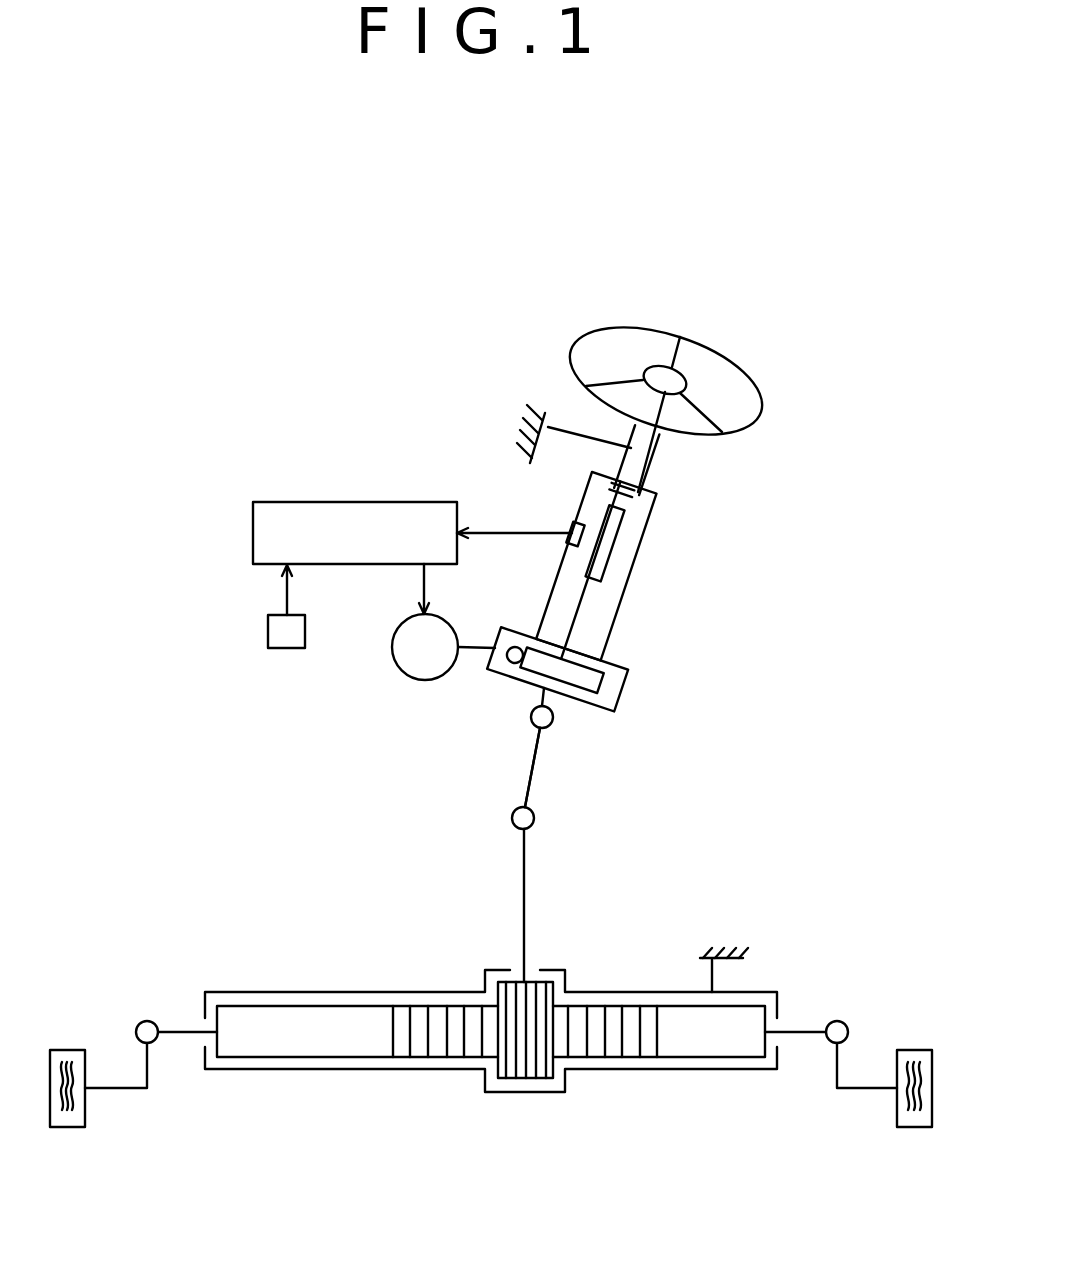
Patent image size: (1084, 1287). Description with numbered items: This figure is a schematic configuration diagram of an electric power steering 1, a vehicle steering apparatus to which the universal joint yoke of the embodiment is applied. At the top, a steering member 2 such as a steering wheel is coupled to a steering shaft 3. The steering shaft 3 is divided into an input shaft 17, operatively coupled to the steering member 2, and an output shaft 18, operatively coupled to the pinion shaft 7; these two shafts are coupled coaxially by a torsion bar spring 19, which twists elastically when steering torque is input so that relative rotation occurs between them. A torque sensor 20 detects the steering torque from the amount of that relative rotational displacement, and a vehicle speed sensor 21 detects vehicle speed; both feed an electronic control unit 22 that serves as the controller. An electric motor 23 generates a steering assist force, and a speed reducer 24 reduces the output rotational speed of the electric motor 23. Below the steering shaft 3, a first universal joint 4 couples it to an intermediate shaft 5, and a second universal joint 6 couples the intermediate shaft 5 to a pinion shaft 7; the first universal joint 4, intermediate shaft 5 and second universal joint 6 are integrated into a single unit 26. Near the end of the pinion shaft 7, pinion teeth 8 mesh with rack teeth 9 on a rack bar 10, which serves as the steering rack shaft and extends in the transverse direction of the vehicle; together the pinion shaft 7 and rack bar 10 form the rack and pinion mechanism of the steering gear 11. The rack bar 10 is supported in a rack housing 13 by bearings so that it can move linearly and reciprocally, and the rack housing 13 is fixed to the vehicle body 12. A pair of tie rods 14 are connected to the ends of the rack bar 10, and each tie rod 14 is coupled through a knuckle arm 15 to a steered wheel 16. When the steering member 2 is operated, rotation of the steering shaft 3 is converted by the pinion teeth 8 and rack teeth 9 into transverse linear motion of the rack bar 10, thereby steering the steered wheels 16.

The electric power steering 1 is at (788, 323).
The steering member 2 is at (652, 326).
The steering shaft 3 is at (650, 451).
The first universal joint 4 is at (553, 717).
The intermediate shaft 5 is at (533, 768).
The second universal joint 6 is at (533, 818).
The pinion shaft 7 is at (526, 930).
The pinion teeth 8 is at (542, 1075).
The rack teeth 9 is at (457, 1050).
The rack bar 10 is at (612, 1060).
The steering gear 11 is at (565, 1058).
The vehicle body 12 is at (531, 462).
The rack housing 13 is at (377, 991).
The tie rod 14 is at (187, 1031).
The knuckle arm 15 is at (150, 1060).
The steered wheel 16 is at (67, 1128).
The input shaft 17 is at (630, 503).
The output shaft 18 is at (582, 617).
The torsion bar spring 19 is at (610, 567).
The torque sensor 20 is at (573, 527).
The vehicle speed sensor 21 is at (287, 650).
The electronic control unit 22 is at (285, 501).
The electric motor 23 is at (425, 679).
The speed reducer 24 is at (630, 681).
The single unit 26 is at (527, 787).